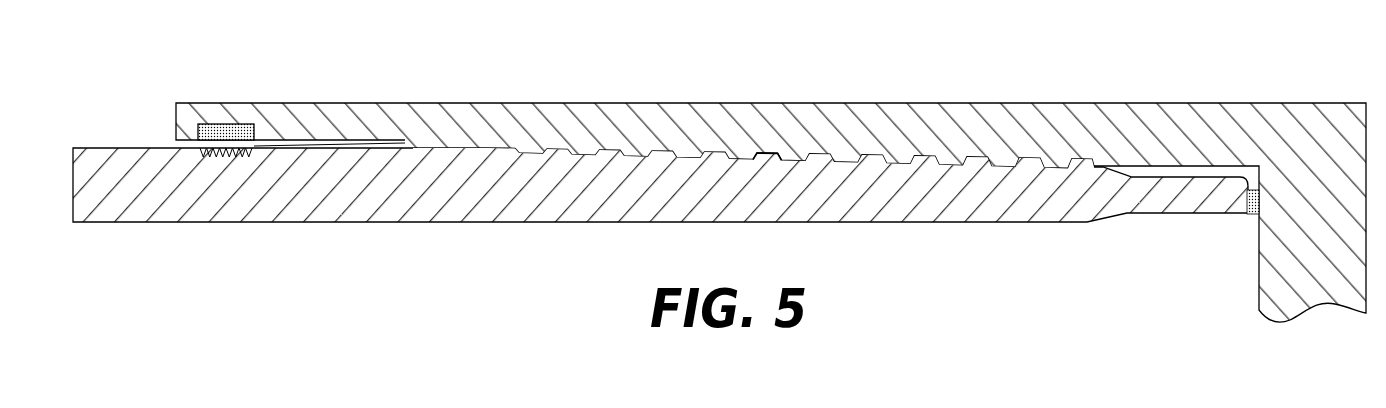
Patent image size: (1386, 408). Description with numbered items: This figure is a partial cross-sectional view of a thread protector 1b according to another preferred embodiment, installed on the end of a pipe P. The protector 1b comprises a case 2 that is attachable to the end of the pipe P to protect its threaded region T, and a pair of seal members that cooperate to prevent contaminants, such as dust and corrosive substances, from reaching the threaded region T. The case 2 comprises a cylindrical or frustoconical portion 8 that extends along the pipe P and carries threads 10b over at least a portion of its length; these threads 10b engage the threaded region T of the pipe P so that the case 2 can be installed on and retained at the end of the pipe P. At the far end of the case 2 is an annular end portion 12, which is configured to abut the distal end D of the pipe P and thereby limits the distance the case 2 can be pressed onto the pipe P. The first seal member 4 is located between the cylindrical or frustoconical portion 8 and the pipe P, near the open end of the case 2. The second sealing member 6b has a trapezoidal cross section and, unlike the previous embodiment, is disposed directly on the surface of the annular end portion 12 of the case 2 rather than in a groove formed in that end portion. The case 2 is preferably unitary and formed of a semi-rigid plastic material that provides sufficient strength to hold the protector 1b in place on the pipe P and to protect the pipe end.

The thread protector 1b is at (330, 78).
The case 2 is at (772, 180).
The first seal member 4 is at (217, 128).
The second sealing member 6b is at (1252, 215).
The cylindrical or frustoconical portion 8 is at (438, 125).
The threads 10b is at (688, 152).
The annular end portion 12 is at (1348, 157).
The pipe P is at (662, 231).
The threaded region T is at (763, 157).
The distal end D is at (1233, 197).